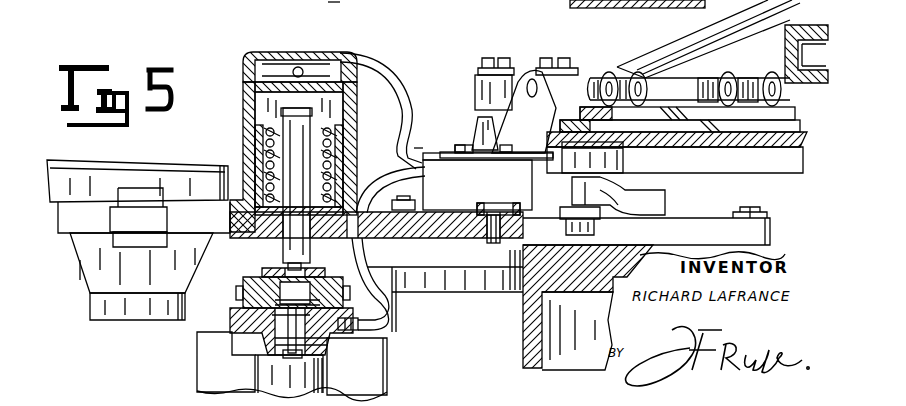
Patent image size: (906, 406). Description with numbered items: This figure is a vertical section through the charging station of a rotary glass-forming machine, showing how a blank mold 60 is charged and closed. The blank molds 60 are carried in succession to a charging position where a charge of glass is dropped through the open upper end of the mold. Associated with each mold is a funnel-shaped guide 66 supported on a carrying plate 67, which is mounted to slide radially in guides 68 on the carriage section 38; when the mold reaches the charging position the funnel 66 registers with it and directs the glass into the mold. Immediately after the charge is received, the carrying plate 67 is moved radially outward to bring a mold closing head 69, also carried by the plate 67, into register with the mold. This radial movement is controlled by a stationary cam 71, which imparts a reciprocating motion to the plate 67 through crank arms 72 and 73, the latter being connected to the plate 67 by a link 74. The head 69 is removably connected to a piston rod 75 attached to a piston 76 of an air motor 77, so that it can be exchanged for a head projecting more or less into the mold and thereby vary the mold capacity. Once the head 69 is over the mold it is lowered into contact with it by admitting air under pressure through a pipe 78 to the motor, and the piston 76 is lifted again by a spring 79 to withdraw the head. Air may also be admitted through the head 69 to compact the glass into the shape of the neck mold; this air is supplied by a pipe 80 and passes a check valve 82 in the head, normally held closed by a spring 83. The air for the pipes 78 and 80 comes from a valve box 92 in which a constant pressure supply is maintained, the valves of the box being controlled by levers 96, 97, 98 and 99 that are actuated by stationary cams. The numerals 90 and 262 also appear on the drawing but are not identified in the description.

The carriage section 38 is at (528, 330).
The blank mold 60 is at (377, 382).
The funnel-shaped guide 66 is at (95, 268).
The carrying plate 67 is at (440, 227).
The guides 68 is at (708, 238).
The mold closing head 69 is at (323, 338).
The stationary cam 71 is at (637, 150).
The crank arm 72 is at (583, 182).
The crank arm 73 is at (630, 210).
The link 74 is at (527, 210).
The piston rod 75 is at (288, 245).
The piston 76 is at (248, 68).
The air motor 77 is at (247, 140).
The pipe 78 is at (390, 83).
The spring 79 is at (334, 173).
The pipe 80 is at (389, 315).
The check valve 82 is at (268, 363).
The spring 83 is at (233, 330).
The member 90 is at (320, 5).
The valve box 92 is at (428, 157).
The lever 96 is at (508, 87).
The lever 97 is at (618, 70).
The lever 98 is at (683, 82).
The lever 99 is at (745, 80).
The bracket 262 is at (808, 63).